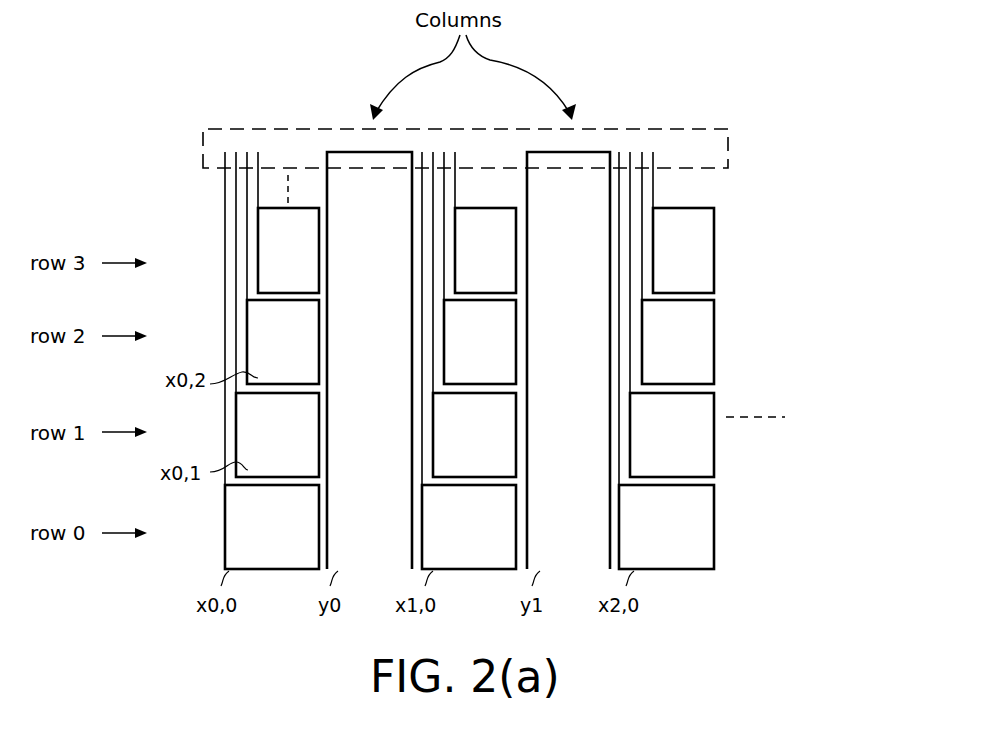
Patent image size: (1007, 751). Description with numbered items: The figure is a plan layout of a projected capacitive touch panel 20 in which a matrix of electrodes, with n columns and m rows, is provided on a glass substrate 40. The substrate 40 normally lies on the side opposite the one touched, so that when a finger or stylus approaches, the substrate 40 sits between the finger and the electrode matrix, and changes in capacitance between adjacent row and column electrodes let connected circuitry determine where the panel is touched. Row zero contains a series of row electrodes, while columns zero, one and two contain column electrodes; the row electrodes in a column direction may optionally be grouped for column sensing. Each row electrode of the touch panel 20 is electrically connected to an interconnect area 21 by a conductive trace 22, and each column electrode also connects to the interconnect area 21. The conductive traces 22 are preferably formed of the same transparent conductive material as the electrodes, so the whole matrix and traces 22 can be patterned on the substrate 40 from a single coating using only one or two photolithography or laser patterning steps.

The touch panel 20 is at (772, 169).
The interconnect area 21 is at (203, 163).
The conductive trace 22 is at (225, 182).
The substrate 40 is at (703, 188).